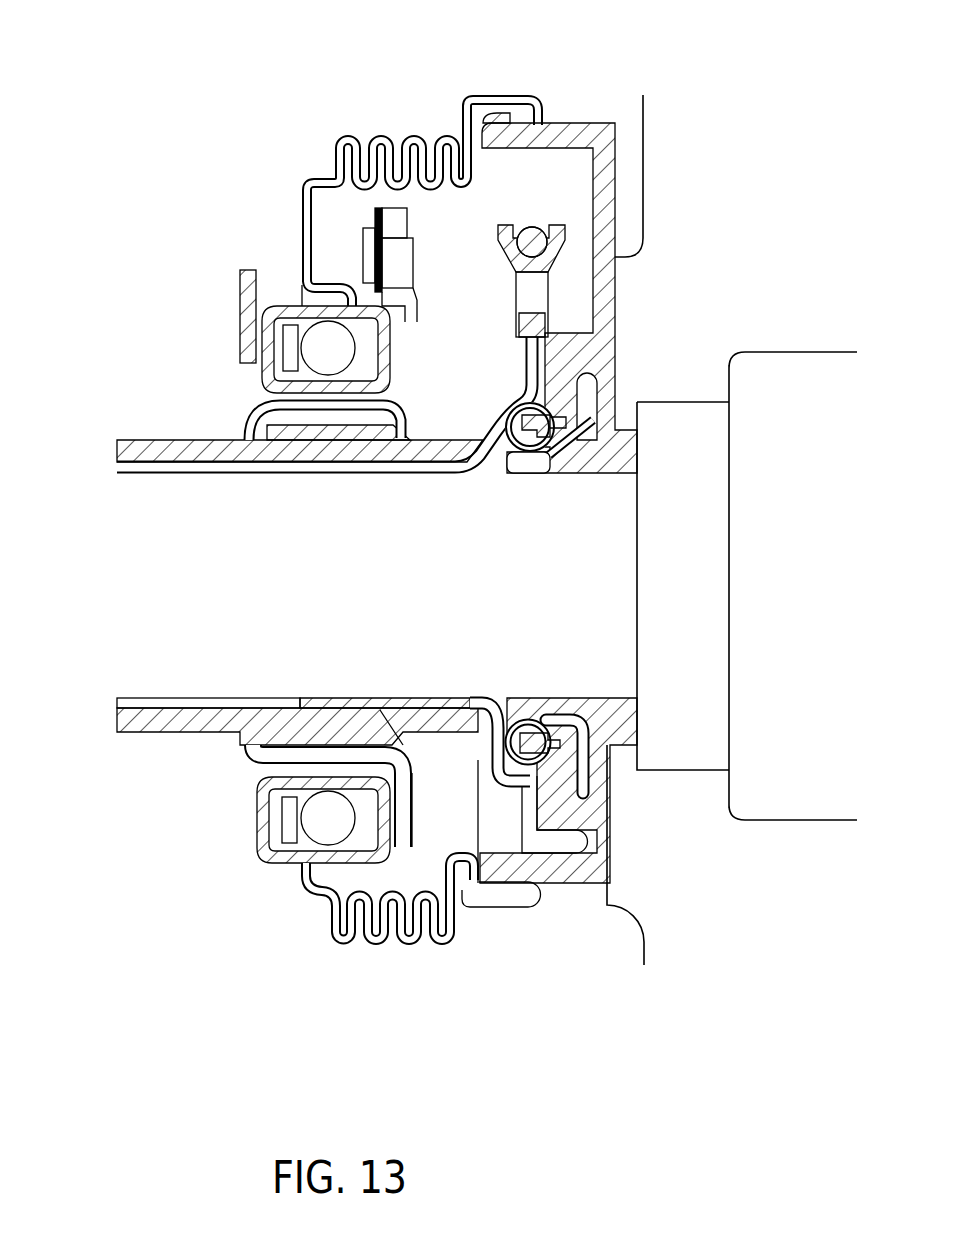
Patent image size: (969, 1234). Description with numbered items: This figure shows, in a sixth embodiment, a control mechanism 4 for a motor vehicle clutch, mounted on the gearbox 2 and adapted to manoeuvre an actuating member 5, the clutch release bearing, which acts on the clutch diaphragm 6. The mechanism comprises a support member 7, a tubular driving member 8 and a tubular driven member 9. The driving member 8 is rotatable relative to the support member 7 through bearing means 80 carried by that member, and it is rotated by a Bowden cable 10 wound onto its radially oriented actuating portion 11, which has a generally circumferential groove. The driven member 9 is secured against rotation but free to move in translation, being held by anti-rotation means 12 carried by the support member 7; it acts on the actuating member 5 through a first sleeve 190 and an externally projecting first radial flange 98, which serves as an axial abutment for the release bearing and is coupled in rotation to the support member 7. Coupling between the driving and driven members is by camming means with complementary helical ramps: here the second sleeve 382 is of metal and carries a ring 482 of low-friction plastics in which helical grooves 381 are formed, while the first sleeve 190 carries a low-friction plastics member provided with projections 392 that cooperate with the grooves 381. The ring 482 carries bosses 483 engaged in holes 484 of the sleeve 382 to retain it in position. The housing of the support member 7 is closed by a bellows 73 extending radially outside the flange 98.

The gearbox 2 is at (694, 849).
The control mechanism 4 is at (516, 73).
The actuating member 5 is at (279, 293).
The diaphragm 6 is at (240, 288).
The support member 7 is at (577, 125).
The tubular driving member 8 is at (112, 716).
The tubular driven member 9 is at (417, 845).
The Bowden cable 10 is at (535, 228).
The actuating portion 11 is at (535, 300).
The anti-rotation means 12 is at (375, 211).
The bellows 73 is at (398, 948).
The bearing means 80 is at (540, 400).
The first radial flange 98 is at (418, 792).
The first sleeve 190 is at (248, 762).
The helical grooves 381 is at (300, 453).
The second sleeve 382 is at (153, 477).
The projections 392 is at (378, 722).
The ring 482 is at (123, 438).
The bosses 483 is at (323, 698).
The holes 484 is at (303, 700).